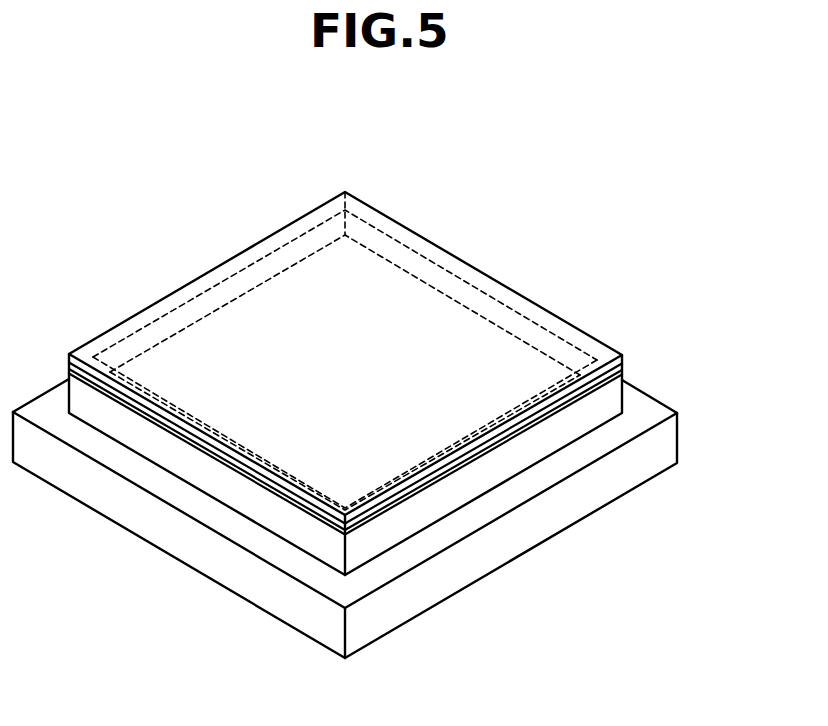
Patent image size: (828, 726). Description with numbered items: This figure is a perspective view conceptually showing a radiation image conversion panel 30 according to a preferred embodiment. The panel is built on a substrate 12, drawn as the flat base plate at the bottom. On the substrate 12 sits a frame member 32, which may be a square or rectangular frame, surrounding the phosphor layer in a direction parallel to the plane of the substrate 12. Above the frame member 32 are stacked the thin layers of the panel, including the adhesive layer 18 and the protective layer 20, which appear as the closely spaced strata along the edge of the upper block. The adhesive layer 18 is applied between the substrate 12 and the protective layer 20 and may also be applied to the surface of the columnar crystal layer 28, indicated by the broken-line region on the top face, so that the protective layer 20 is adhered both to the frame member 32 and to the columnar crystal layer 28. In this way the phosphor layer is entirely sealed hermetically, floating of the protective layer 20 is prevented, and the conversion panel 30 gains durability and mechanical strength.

The substrate 12 is at (345, 518).
The adhesive layer 18 is at (622, 377).
The protective layer 20 is at (622, 362).
The columnar crystal layer 28 is at (442, 338).
The conversion panel 30 is at (392, 344).
The frame member 32 is at (450, 493).